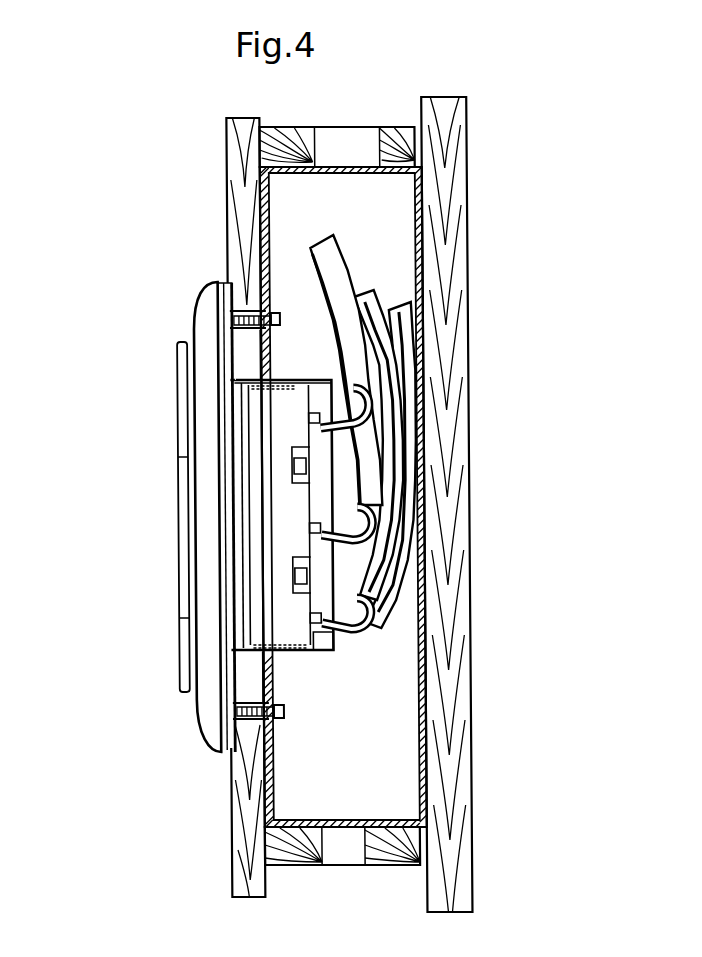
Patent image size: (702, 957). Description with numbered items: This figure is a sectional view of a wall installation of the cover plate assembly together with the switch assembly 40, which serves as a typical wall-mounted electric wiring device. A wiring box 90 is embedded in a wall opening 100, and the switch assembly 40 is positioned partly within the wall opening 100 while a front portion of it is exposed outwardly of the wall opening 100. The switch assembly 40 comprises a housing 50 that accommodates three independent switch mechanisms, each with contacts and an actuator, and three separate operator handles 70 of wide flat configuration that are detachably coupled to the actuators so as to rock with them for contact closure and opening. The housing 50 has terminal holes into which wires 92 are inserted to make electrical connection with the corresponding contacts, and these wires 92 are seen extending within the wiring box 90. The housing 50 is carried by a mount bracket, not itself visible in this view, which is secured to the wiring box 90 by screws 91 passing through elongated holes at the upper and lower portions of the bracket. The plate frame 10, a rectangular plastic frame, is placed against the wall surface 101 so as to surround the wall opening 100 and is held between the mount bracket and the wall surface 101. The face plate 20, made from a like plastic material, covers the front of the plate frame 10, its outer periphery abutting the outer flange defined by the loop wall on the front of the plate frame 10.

The wall surface 101 is at (228, 162).
The wiring box 90 is at (412, 628).
The wires 92 is at (343, 425).
The switch assembly 40 is at (293, 535).
The housing 50 is at (300, 398).
The screws 91 is at (230, 316).
The plate frame 10 is at (229, 755).
The wall opening 100 is at (242, 358).
The face plate 20 is at (190, 711).
The operator handles 70 is at (179, 602).